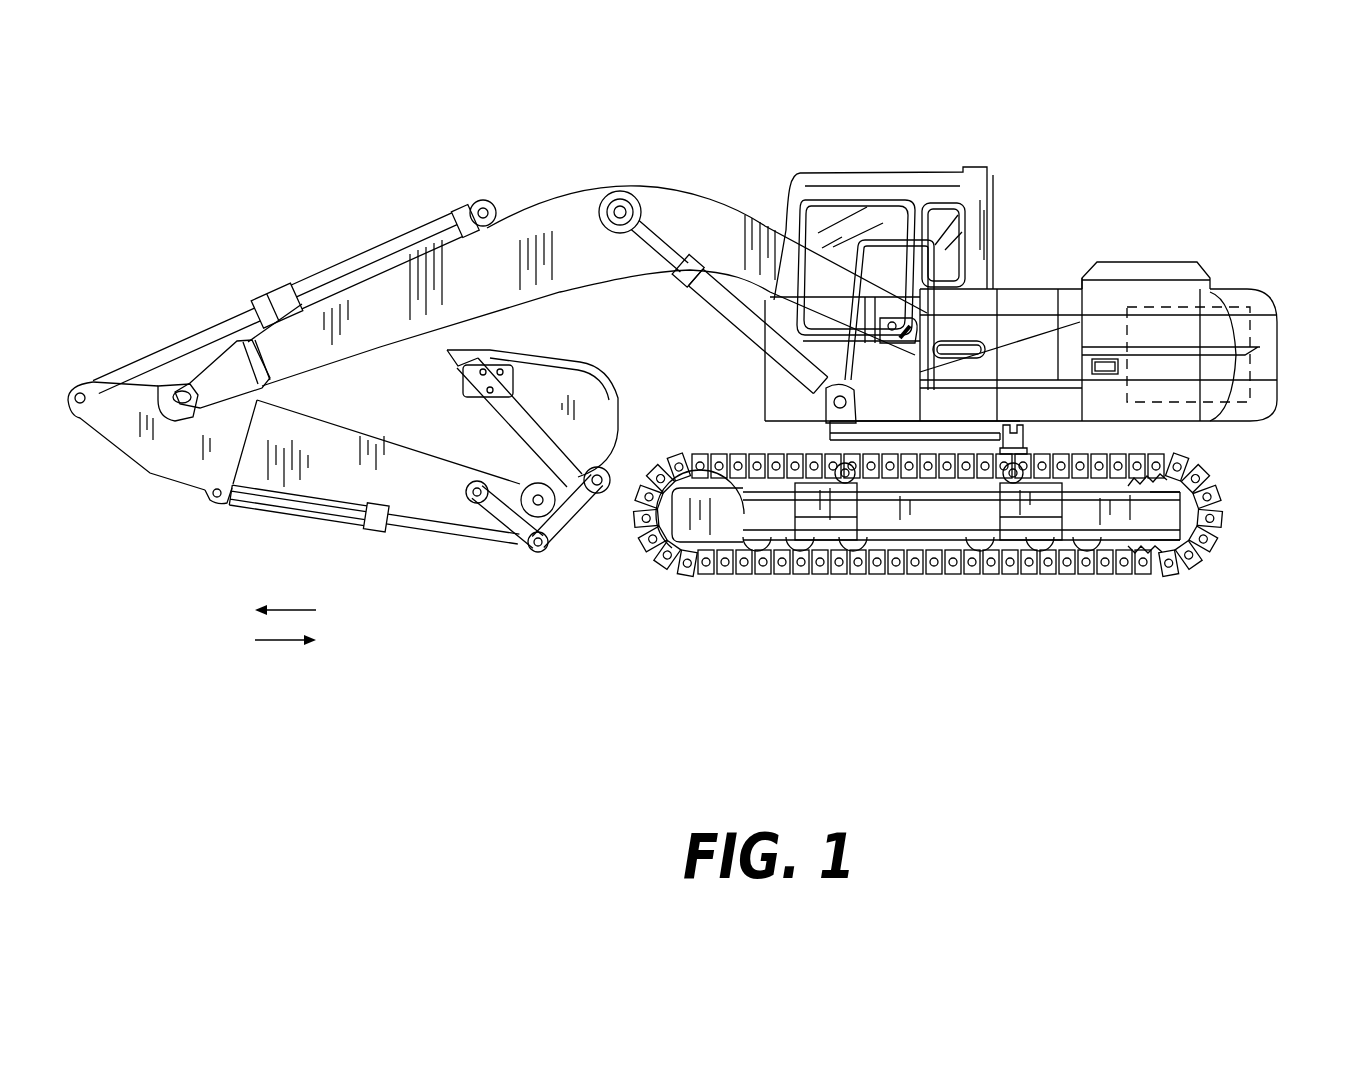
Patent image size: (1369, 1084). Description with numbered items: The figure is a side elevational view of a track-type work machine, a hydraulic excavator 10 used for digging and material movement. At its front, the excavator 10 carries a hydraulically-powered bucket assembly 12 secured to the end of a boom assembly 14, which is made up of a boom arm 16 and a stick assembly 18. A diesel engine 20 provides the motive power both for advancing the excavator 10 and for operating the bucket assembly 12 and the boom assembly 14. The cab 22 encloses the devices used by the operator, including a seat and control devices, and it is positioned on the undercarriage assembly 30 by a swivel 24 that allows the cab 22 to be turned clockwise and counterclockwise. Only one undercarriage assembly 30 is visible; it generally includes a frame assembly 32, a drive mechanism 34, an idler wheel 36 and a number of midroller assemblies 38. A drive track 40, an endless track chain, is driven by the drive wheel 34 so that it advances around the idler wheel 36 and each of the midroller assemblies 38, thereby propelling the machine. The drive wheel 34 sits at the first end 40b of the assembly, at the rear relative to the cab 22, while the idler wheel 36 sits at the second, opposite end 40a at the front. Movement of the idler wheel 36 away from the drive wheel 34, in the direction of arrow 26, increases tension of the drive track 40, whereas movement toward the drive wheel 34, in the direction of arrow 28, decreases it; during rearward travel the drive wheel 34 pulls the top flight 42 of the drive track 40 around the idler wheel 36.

The hydraulic excavator 10 is at (705, 413).
The bucket assembly 12 is at (619, 410).
The boom assembly 14 is at (500, 172).
The boom arm 16 is at (667, 190).
The stick assembly 18 is at (143, 450).
The diesel engine 20 is at (1018, 273).
The cab 22 is at (848, 168).
The swivel 24 is at (810, 432).
The arrow 26 is at (290, 607).
The arrow 28 is at (296, 642).
The undercarriage assembly 30 is at (936, 526).
The frame assembly 32 is at (917, 520).
The drive mechanism 34 is at (1176, 558).
The idler wheel 36 is at (655, 530).
The midroller assemblies 38 is at (800, 467).
The drive track 40 is at (936, 513).
The second end 40a is at (618, 508).
The first end 40b is at (1250, 521).
The top flight 42 is at (1036, 448).